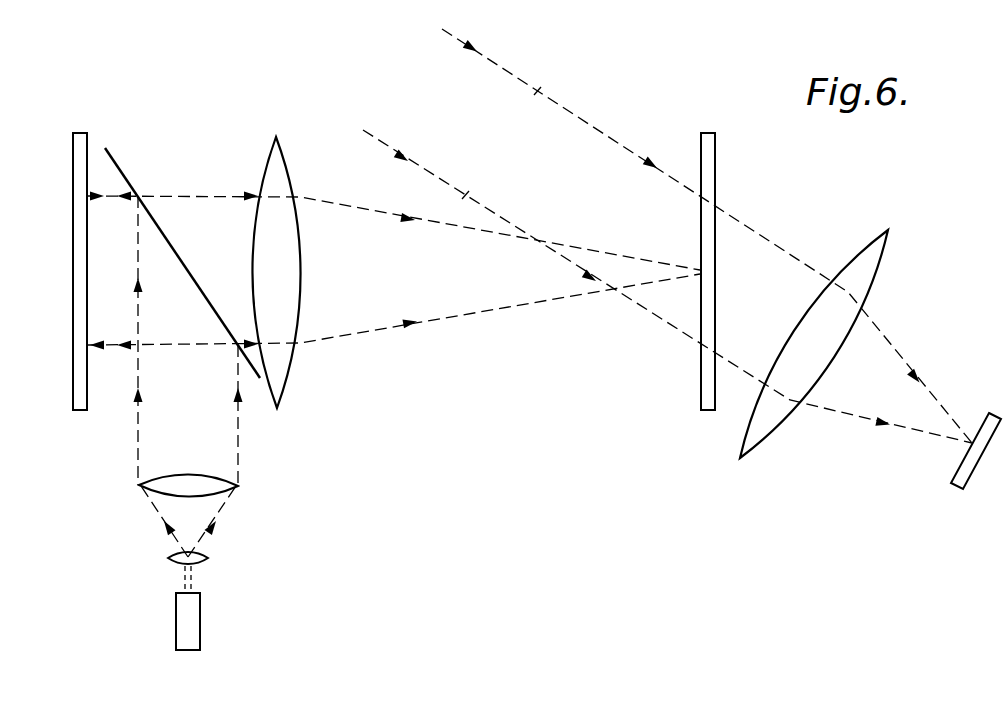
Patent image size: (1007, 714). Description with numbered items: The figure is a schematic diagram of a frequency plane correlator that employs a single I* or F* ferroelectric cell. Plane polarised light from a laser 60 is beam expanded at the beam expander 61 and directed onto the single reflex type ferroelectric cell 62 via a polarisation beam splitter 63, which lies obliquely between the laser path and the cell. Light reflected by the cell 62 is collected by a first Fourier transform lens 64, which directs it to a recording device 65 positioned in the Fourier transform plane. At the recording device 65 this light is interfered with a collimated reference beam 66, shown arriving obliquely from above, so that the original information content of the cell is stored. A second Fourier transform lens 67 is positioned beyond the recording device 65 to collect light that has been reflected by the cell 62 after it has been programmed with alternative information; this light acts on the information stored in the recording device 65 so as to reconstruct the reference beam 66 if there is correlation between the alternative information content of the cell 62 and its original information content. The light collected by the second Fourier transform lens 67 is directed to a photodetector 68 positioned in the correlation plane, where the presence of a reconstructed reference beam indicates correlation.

The laser 60 is at (176, 616).
The beam expander 61 is at (184, 556).
The reflex type ferroelectric cell 62 is at (73, 155).
The polarisation beam splitter 63 is at (118, 160).
The first Fourier transform lens 64 is at (266, 152).
The recording device 65 is at (712, 176).
The collimated reference beam 66 is at (537, 91).
The second Fourier transform lens 67 is at (892, 200).
The photodetector 68 is at (996, 416).